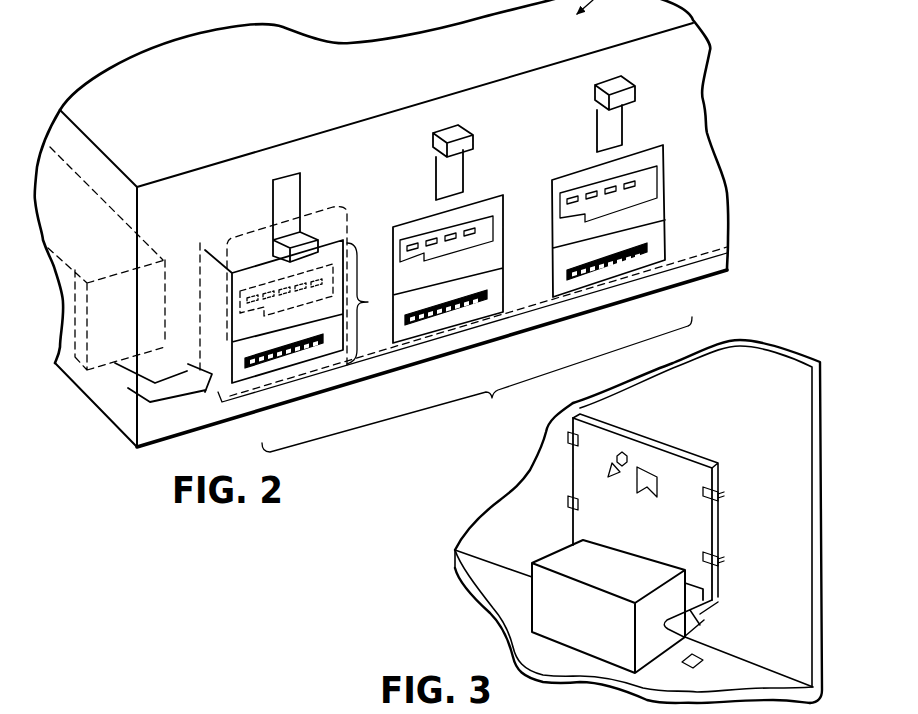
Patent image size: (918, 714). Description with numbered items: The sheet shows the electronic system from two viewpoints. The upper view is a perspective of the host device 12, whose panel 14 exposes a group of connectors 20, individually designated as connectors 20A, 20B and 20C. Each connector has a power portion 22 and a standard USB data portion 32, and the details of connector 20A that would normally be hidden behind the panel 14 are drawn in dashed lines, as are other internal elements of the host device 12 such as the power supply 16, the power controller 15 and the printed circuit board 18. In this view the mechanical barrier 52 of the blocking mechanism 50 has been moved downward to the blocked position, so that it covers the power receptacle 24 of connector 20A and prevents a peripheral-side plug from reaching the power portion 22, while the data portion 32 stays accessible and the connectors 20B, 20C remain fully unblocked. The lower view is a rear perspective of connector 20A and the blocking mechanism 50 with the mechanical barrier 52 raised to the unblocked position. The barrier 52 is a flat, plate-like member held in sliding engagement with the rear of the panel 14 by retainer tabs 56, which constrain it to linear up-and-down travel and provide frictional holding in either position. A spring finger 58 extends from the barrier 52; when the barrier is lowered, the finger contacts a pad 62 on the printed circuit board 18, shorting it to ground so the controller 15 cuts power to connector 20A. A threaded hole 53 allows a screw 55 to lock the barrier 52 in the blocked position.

In FIG. 2, the host device 12 is at (383, 65).
In FIG. 3, the host device 12 is at (803, 363).
In FIG. 3, the panel 14 is at (797, 518).
In FIG. 2, the power controller 15 is at (80, 325).
In FIG. 2, the power supply 16 is at (77, 200).
In FIG. 3, the printed circuit board 18 is at (485, 577).
In FIG. 2, the group of electronic connectors 20 is at (477, 384).
In FIG. 2, the connector 20A is at (197, 229).
In FIG. 3, the connector 20A is at (545, 562).
In FIG. 2, the connector 20B is at (486, 186).
In FIG. 2, the connector 20C is at (646, 138).
In FIG. 2, the power portion 22 is at (369, 301).
In FIG. 2, the power receptacle 24 is at (325, 267).
In FIG. 2, the data portion 32 is at (351, 364).
In FIG. 3, the blocking mechanism 50 is at (705, 431).
In FIG. 2, the mechanical barrier 52 is at (315, 208).
In FIG. 3, the mechanical barrier 52 is at (690, 473).
In FIG. 3, the threaded hole 53 is at (623, 453).
In FIG. 3, the screw 55 is at (614, 478).
In FIG. 3, the retainer tabs 56 is at (568, 500).
In FIG. 3, the spring finger 58 is at (697, 607).
In FIG. 3, the pad 62 is at (712, 660).